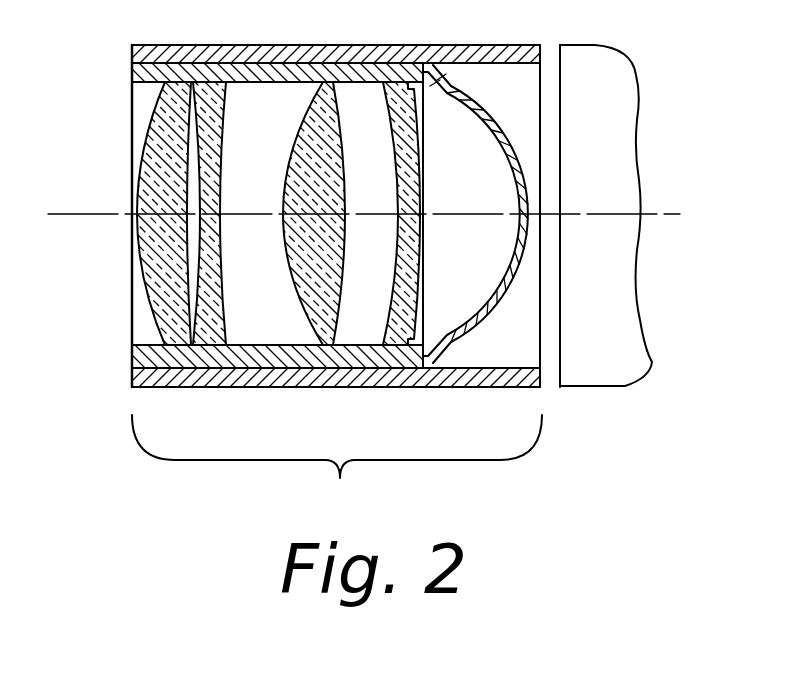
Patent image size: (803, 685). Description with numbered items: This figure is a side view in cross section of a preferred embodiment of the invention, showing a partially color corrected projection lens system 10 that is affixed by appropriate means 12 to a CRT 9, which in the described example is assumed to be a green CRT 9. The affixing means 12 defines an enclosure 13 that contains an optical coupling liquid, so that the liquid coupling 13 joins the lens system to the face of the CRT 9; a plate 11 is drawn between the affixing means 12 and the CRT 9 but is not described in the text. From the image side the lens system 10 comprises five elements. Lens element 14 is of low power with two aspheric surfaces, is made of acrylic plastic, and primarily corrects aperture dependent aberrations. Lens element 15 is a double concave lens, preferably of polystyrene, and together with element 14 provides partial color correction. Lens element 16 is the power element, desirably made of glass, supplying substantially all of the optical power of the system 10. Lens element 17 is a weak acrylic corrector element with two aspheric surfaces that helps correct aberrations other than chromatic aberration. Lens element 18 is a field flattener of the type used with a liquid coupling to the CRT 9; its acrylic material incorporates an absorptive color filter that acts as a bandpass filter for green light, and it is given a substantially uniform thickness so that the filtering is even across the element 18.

The CRT 9 is at (620, 388).
The projection lens system 10 is at (337, 466).
The mounting flange plate 11 is at (562, 158).
The means for affixing the lens system to the CRT 12 is at (488, 45).
The enclosure 13 is at (527, 104).
The lens element 14 is at (152, 181).
The lens element 15 is at (212, 111).
The lens element 16 is at (330, 180).
The lens element 17 is at (410, 181).
The lens element 18 is at (515, 254).